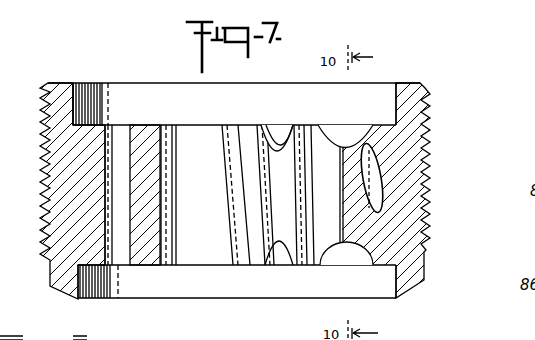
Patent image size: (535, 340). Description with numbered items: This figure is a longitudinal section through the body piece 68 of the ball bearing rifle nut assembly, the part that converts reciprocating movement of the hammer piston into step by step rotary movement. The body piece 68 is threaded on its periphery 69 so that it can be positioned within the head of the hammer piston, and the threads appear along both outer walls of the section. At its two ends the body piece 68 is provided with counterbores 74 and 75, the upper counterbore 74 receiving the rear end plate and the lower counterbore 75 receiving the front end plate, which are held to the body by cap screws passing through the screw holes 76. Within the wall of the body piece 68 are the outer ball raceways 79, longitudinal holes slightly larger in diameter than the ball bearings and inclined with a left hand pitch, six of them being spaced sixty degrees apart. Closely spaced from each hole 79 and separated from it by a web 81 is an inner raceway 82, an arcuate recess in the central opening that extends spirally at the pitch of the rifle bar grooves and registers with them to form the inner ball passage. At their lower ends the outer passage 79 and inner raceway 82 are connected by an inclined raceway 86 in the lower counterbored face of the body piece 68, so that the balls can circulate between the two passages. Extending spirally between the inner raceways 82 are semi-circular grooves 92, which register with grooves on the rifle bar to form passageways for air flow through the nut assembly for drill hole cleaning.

The body piece 68 is at (61, 84).
The threaded periphery 69 is at (430, 205).
The counterbore 74 is at (99, 84).
The counterbore 75 is at (122, 289).
The hole 76 is at (127, 135).
The outer ball raceway 79 is at (384, 179).
The web 81 is at (349, 152).
The inner raceway 82 is at (270, 152).
The inclined raceway 86 is at (349, 256).
The semi-circular groove 92 is at (232, 198).